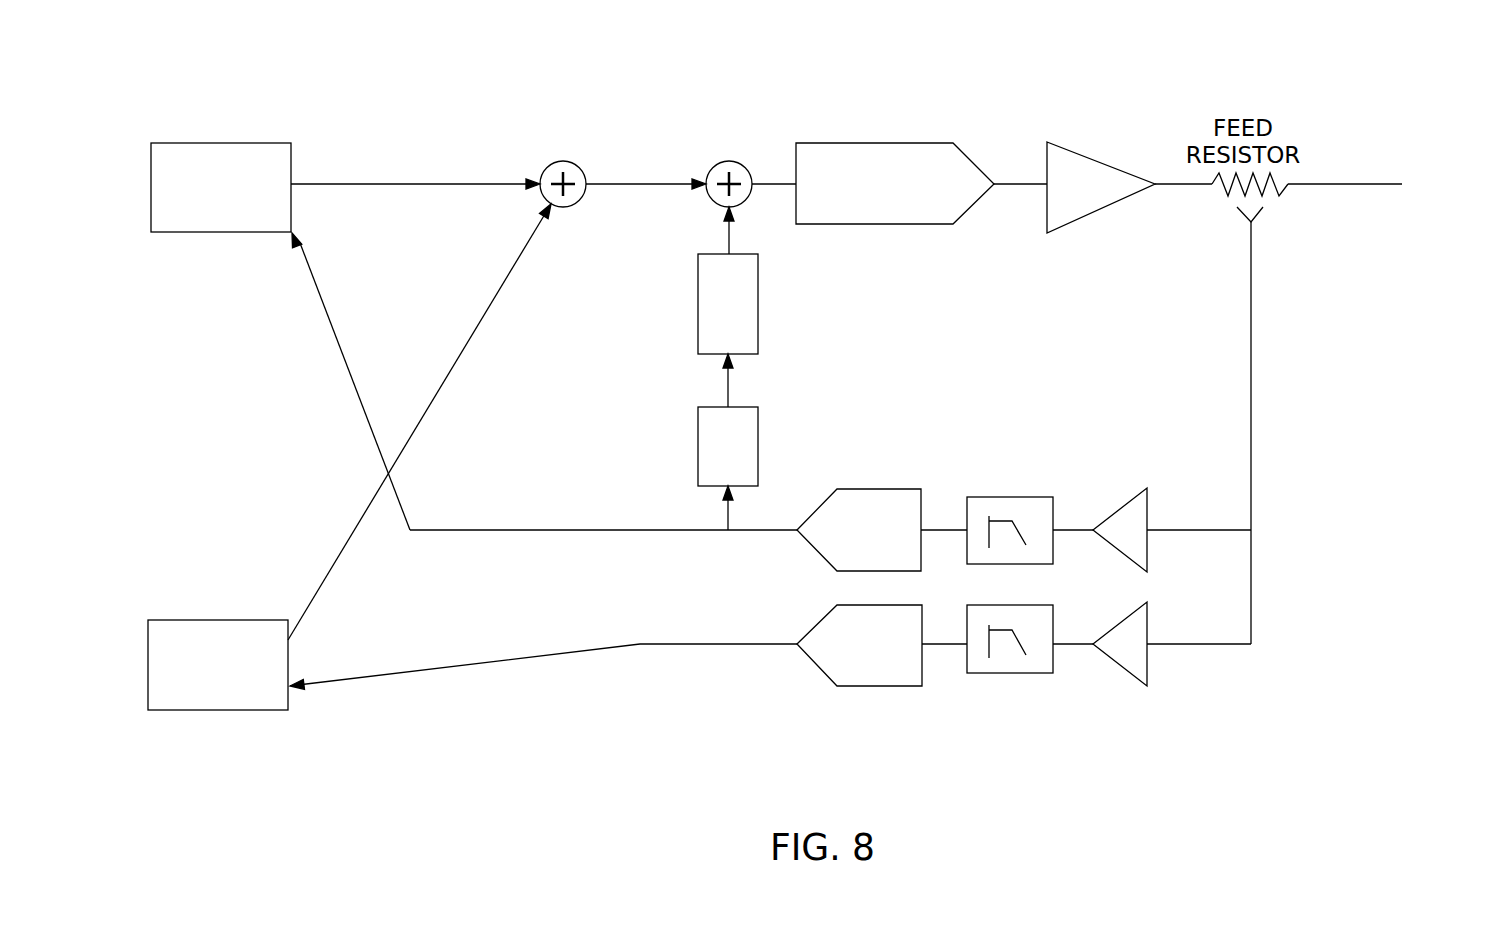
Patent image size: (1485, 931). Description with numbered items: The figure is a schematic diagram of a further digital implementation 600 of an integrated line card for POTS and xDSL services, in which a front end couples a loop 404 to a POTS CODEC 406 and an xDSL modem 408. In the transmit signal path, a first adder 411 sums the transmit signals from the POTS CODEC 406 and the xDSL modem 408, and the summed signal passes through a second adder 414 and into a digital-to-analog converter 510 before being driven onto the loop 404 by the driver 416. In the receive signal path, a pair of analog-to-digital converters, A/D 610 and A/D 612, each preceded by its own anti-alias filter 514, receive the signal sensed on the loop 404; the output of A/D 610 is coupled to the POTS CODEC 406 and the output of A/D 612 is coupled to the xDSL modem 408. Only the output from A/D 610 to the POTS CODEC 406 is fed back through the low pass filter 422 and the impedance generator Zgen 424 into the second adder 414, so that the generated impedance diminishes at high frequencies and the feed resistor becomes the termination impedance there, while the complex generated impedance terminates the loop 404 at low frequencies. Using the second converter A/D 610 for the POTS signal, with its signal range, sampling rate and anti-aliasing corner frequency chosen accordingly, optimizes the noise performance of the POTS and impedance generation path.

The loop 404 is at (1363, 186).
The POTS CODEC 406 is at (277, 162).
The xDSL modem 408 is at (225, 635).
The first adder 411 is at (578, 168).
The second adder 414 is at (741, 167).
The driver 416 is at (1102, 195).
The low pass filter 422 is at (748, 413).
The impedance generator Zgen 424 is at (708, 298).
The digital-to-analog converter 510 is at (925, 167).
The anti-alias filter 514 is at (1040, 517).
The further digital implementation 600 is at (1173, 803).
The A/D 610 is at (902, 505).
The A/D 612 is at (890, 668).